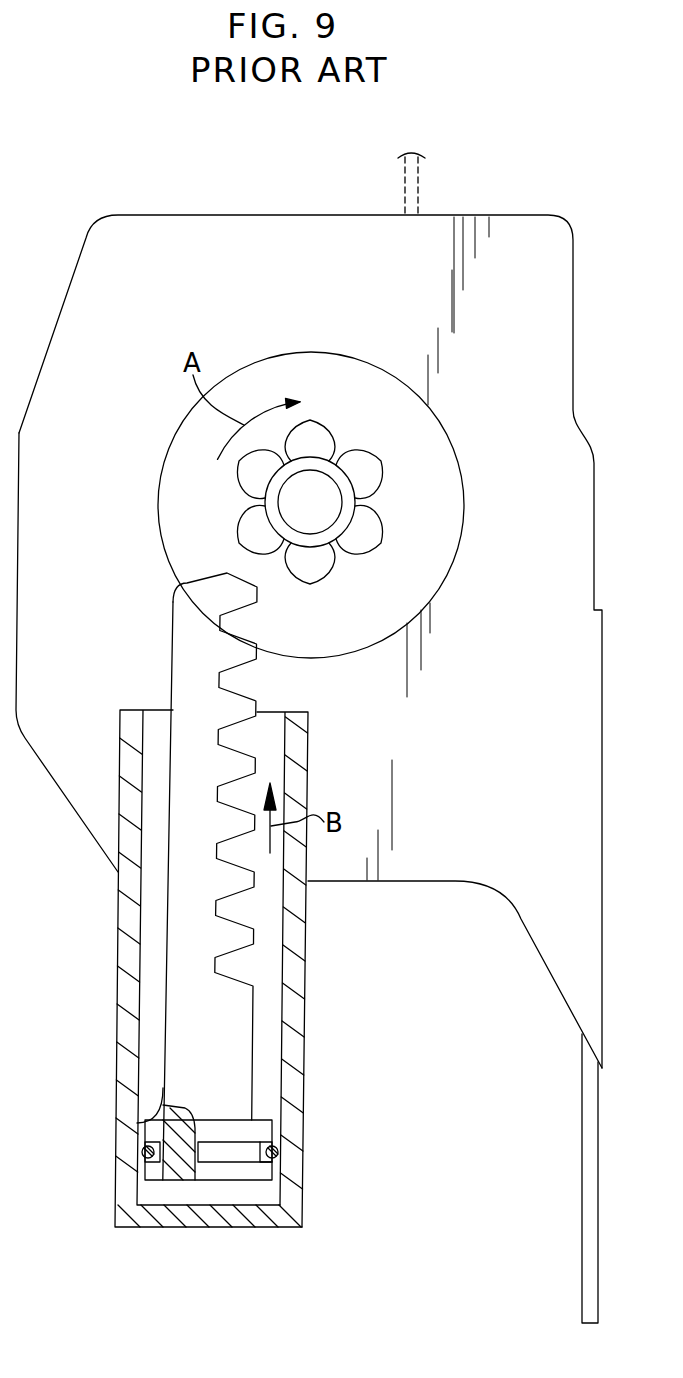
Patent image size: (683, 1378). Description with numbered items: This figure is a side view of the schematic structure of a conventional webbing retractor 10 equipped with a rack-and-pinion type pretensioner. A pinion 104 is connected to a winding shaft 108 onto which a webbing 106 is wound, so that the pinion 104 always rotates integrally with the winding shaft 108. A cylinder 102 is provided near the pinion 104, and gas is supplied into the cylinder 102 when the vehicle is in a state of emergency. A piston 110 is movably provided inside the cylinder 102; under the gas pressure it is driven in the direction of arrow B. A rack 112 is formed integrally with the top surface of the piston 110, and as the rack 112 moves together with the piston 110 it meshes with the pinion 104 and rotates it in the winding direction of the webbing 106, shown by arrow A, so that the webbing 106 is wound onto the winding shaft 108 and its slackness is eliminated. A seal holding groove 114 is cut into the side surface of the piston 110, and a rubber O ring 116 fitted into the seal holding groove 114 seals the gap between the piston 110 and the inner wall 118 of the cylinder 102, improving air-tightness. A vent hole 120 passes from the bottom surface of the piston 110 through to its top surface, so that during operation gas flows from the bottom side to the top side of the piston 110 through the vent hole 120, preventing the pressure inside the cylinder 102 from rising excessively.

The prior art apparatus 10 is at (262, 172).
The cylinder 102 is at (128, 727).
The pinion 104 is at (367, 470).
The webbing 106 is at (420, 163).
The winding shaft 108 is at (320, 490).
The piston 110 is at (262, 1130).
The rack 112 is at (187, 662).
The seal holding groove 114 is at (218, 1142).
The O ring 116 is at (281, 1158).
The inner wall 118 is at (285, 974).
The vent hole 120 is at (160, 1096).